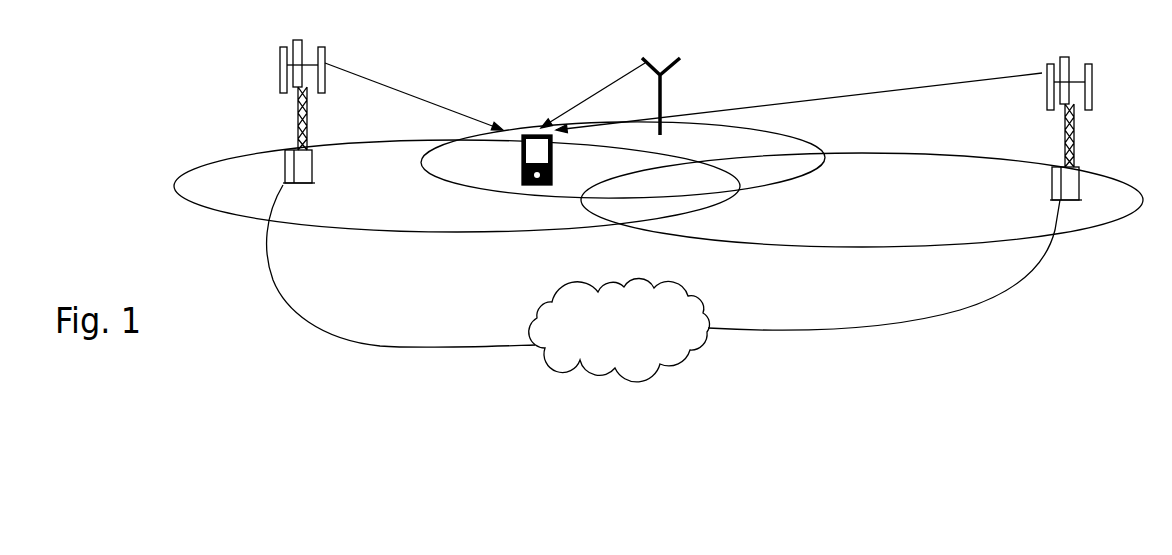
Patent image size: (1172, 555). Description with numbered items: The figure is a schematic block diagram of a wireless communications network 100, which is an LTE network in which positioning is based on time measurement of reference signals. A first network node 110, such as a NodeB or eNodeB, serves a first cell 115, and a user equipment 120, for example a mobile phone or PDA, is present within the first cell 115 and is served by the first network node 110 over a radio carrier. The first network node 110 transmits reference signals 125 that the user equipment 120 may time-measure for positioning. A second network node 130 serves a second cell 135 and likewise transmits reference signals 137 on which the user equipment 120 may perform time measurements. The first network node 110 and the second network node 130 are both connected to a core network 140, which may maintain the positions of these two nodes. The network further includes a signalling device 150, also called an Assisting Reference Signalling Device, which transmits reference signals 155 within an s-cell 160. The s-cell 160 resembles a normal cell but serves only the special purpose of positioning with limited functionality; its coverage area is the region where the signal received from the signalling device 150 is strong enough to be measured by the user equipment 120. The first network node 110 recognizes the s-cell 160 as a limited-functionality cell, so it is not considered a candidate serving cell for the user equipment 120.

The wireless communications network 100 is at (378, 376).
The first network node 110 is at (286, 33).
The first cell 115 is at (213, 201).
The user equipment 120 is at (522, 182).
The reference signals 125 is at (388, 86).
The second network node 130 is at (1044, 52).
The second cell 135 is at (968, 243).
The reference signals 137 is at (799, 100).
The core network 140 is at (632, 341).
The signalling device 150 is at (668, 57).
The reference signals 155 is at (563, 113).
The s-cell 160 is at (424, 163).